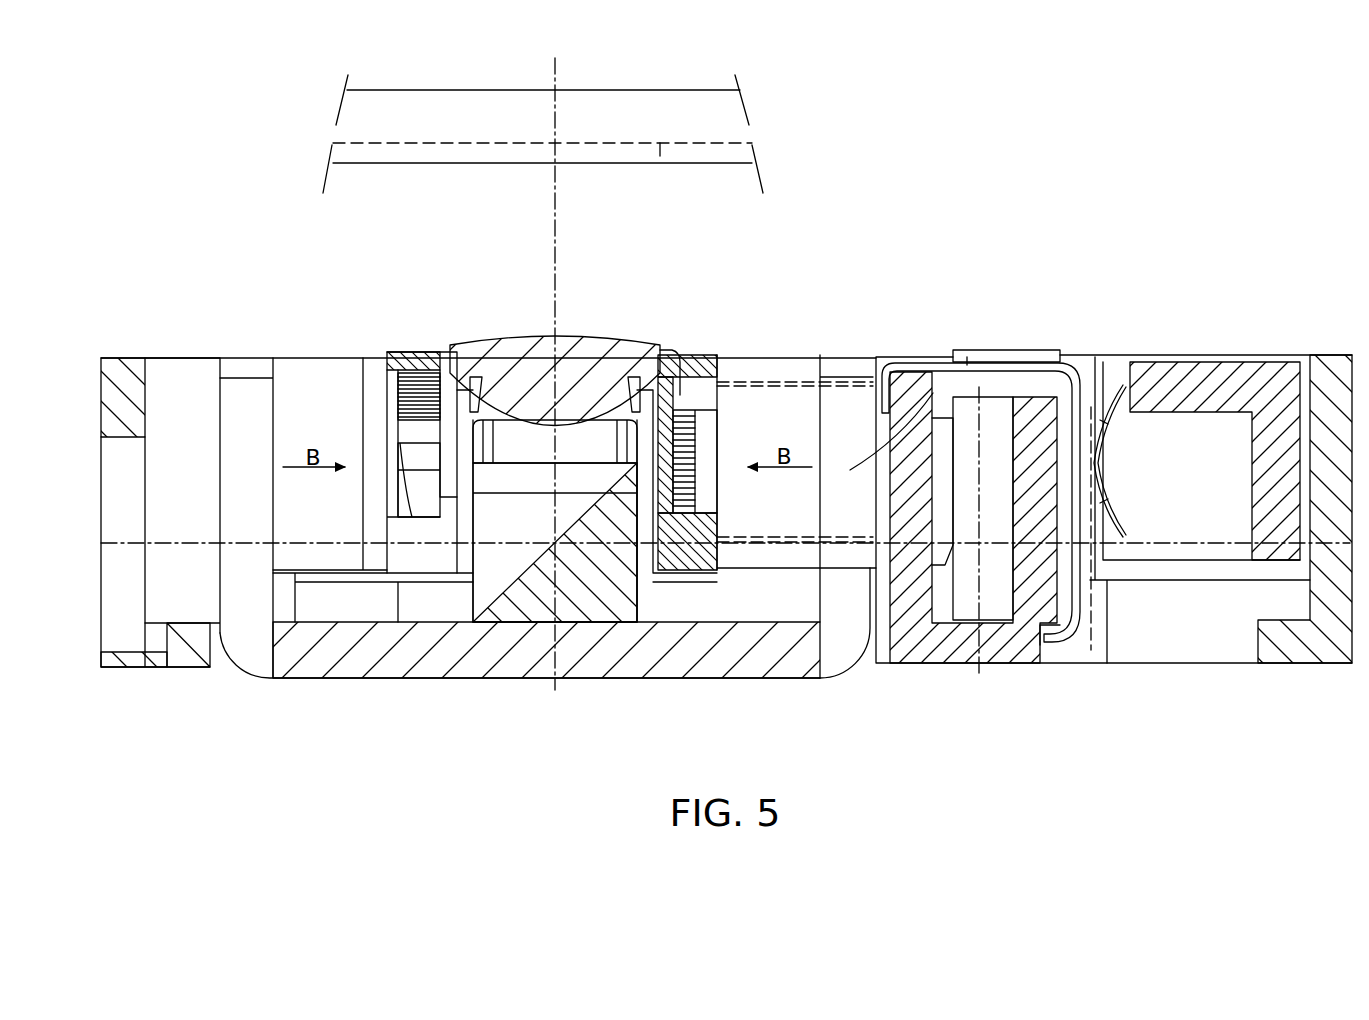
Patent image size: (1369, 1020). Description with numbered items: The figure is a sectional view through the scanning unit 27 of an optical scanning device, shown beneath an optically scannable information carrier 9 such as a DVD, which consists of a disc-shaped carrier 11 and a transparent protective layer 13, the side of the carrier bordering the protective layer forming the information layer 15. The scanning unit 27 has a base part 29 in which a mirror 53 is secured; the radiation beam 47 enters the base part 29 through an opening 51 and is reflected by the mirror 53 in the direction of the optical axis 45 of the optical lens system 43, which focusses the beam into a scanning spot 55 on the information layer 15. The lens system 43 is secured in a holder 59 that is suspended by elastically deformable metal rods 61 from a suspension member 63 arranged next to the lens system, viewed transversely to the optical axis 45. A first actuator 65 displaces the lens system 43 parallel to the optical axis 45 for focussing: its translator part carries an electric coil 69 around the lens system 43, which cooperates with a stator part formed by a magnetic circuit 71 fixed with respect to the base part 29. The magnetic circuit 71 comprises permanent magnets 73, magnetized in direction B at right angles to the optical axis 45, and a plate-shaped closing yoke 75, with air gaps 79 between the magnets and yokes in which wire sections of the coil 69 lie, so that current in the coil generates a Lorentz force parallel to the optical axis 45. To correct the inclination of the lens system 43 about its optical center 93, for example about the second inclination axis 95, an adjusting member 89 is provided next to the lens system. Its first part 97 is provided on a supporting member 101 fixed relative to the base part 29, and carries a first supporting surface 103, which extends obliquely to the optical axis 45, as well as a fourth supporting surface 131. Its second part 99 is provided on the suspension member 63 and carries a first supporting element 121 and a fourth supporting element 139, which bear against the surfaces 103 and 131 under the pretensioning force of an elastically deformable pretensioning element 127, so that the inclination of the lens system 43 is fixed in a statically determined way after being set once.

The information carrier 9 is at (778, 108).
The disc-shaped carrier 11 is at (417, 100).
The transparent protective layer 13 is at (707, 160).
The information layer 15 is at (660, 172).
The scanning unit 27 is at (312, 718).
The base part 29 is at (120, 385).
The optical lens system 43 is at (572, 365).
The optical axis 45 is at (558, 212).
The radiation beam 47 is at (185, 540).
The opening 51 is at (113, 470).
The mirror 53 is at (525, 600).
The scanning spot 55 is at (555, 160).
The holder 59 is at (680, 365).
The metal rods 61 is at (725, 375).
The suspension member 63 is at (968, 358).
The first actuator 65 is at (545, 433).
The electric coil 69 is at (405, 398).
The magnetic circuit 71 is at (894, 300).
The permanent magnets 73 is at (300, 375).
The closing yoke 75 is at (390, 648).
The air gaps 79 is at (518, 478).
The adjusting member 89 is at (987, 693).
The optical center 93 is at (548, 420).
The second inclination axis 95 is at (617, 380).
The first part 97 is at (1008, 334).
The second part 99 is at (931, 337).
The supporting member 101 is at (966, 600).
The first supporting surface 103 is at (922, 630).
The first supporting element 121 is at (904, 585).
The pretensioning element 127 is at (1028, 360).
The fourth supporting surface 131 is at (1065, 355).
The fourth supporting element 139 is at (940, 380).